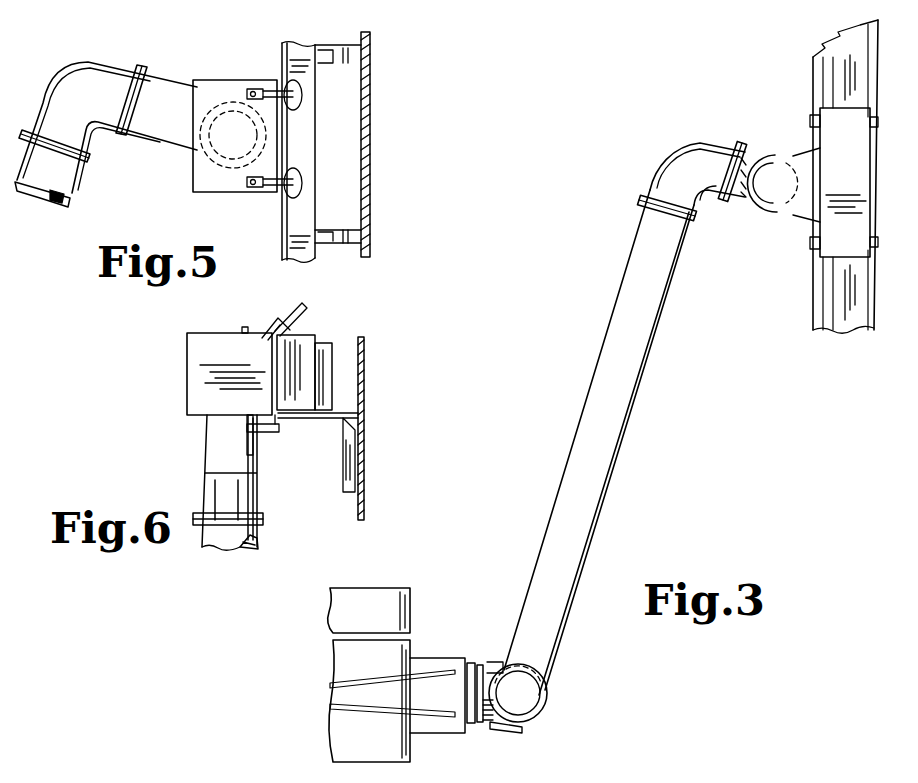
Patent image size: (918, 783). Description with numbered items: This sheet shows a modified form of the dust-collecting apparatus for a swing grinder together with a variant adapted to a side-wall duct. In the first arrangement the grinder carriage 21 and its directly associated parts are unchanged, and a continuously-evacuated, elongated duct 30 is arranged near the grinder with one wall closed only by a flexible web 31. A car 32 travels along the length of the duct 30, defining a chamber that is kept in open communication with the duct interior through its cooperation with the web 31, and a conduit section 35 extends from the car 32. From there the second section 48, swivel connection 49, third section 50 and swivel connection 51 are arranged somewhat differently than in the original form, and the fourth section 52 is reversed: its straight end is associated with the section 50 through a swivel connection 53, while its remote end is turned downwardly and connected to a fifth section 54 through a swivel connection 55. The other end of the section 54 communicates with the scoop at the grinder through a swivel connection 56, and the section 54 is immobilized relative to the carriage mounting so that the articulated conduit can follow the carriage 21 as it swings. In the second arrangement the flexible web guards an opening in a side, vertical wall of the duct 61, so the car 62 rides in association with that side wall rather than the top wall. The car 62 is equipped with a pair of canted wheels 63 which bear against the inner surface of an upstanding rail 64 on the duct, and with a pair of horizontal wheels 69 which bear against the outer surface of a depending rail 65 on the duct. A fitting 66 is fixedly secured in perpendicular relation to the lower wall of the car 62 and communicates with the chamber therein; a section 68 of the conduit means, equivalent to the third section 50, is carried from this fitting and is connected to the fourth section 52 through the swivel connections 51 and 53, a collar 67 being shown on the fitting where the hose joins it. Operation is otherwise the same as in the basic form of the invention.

In FIG. 3, the carriage 21 is at (382, 603).
In FIG. 3, the duct 30 is at (813, 303).
In FIG. 3, the flexible web 31 is at (833, 310).
In FIG. 3, the car 32 is at (861, 168).
In FIG. 3, the conduit section 35 is at (797, 153).
In FIG. 3, the second section 48 is at (745, 158).
In FIG. 3, the swivel connection 49 is at (745, 193).
In FIG. 5, the third section 50 is at (88, 63).
In FIG. 3, the third section 50 is at (687, 143).
In FIG. 5, the swivel connection 51 is at (120, 136).
In FIG. 3, the swivel connection 51 is at (735, 141).
In FIG. 5, the fourth section 52 is at (57, 170).
In FIG. 3, the fourth section 52 is at (643, 337).
In FIG. 5, the swivel connection 53 is at (27, 128).
In FIG. 3, the swivel connection 53 is at (688, 218).
In FIG. 3, the fifth section 54 is at (485, 670).
In FIG. 3, the swivel connection 55 is at (548, 695).
In FIG. 3, the swivel connection 56 is at (472, 723).
In FIG. 5, the duct 61 is at (310, 153).
In FIG. 6, the duct 61 is at (303, 342).
In FIG. 5, the car 62 is at (233, 84).
In FIG. 6, the car 62 is at (229, 371).
In FIG. 5, the canted wheels 63 is at (292, 168).
In FIG. 6, the canted wheels 63 is at (307, 308).
In FIG. 5, the upstanding rail 64 is at (283, 220).
In FIG. 6, the upstanding rail 64 is at (277, 330).
In FIG. 6, the depending rail 65 is at (279, 428).
In FIG. 6, the fitting 66 is at (210, 455).
In FIG. 6, the lower collar 67 is at (264, 520).
In FIG. 5, the section 68 is at (172, 84).
In FIG. 6, the section 68 is at (257, 536).
In FIG. 6, the horizontal wheels 69 is at (265, 440).